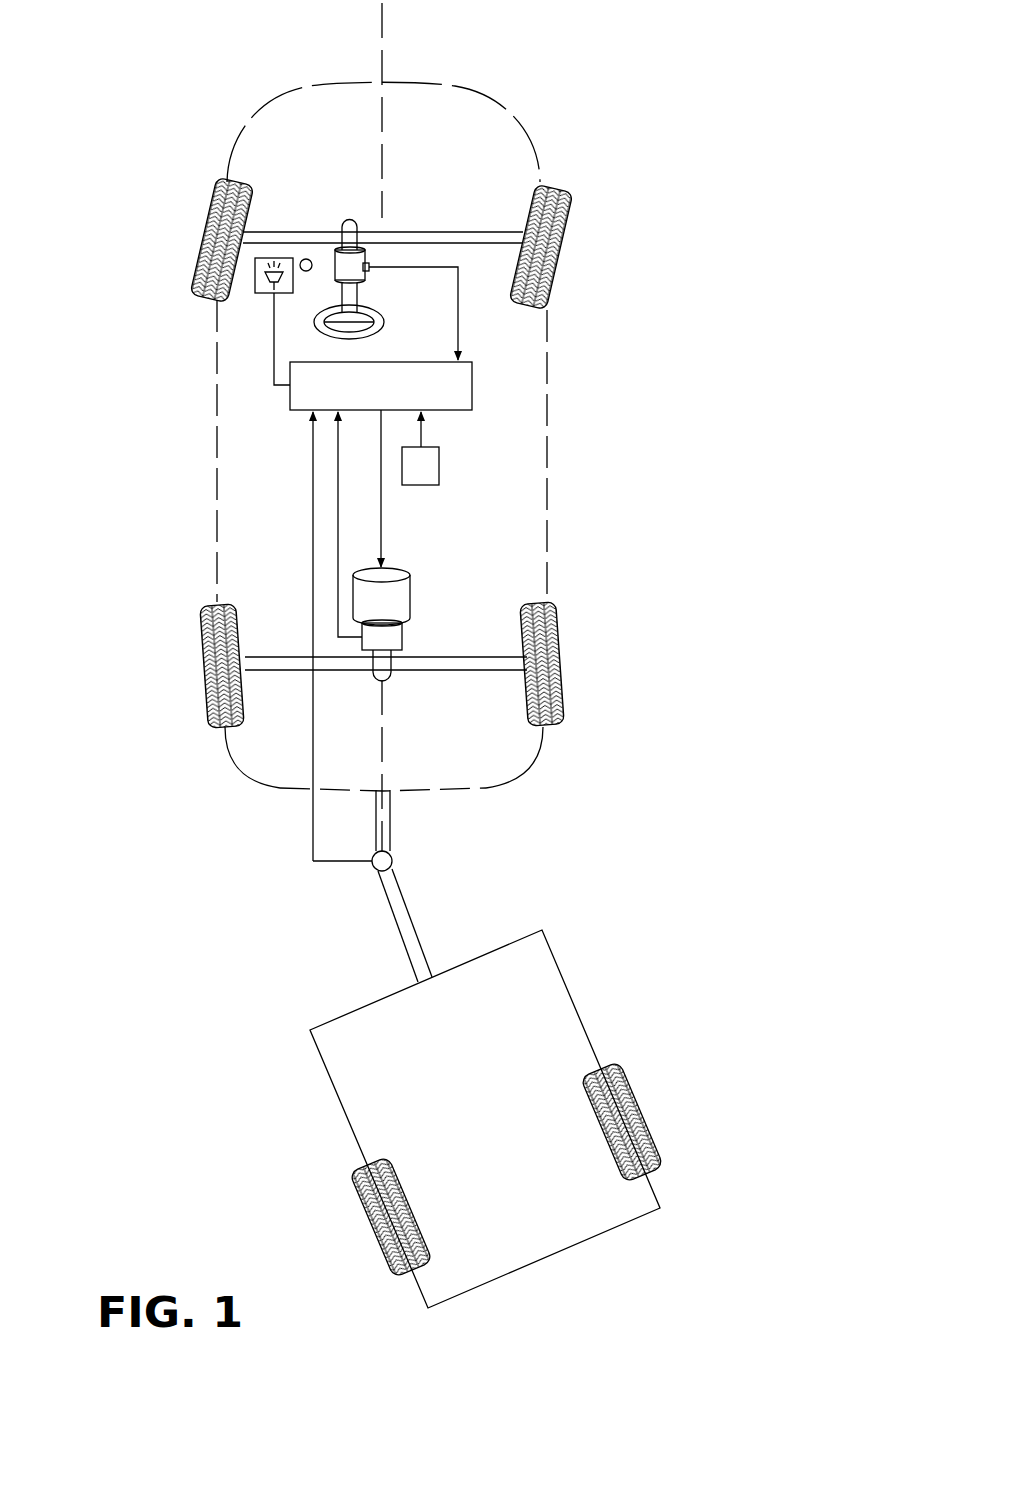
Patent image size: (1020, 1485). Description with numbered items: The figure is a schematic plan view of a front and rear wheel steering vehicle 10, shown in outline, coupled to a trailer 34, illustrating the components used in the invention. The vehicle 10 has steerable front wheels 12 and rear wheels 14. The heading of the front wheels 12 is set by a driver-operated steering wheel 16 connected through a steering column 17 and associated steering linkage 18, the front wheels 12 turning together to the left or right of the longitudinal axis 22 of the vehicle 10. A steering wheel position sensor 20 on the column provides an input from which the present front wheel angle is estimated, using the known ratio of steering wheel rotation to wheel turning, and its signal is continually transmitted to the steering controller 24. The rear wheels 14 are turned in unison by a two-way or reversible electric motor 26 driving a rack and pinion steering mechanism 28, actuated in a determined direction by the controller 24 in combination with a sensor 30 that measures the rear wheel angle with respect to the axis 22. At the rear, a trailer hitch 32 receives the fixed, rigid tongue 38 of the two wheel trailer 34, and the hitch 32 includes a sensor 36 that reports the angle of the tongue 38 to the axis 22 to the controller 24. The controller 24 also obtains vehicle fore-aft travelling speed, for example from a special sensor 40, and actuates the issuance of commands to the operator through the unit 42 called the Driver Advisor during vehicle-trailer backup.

The vehicle 10 is at (552, 453).
The front wheels 12 is at (202, 232).
The rear wheels 14 is at (200, 665).
The steering wheel 16 is at (382, 322).
The steering column 17 is at (352, 294).
The steering linkage 18 is at (420, 234).
The steering wheel position sensor 20 is at (367, 265).
The longitudinal axis 22 is at (382, 48).
The steering controller 24 is at (468, 370).
The electric motor 26 is at (403, 598).
The rack and pinion steering mechanism 28 is at (372, 673).
The rear wheel angle sensor 30 is at (400, 641).
The trailer hitch 32 is at (392, 818).
The trailer 34 is at (578, 1033).
The hitch sensor 36 is at (392, 857).
The trailer tongue 38 is at (412, 922).
The speed sensor 40 is at (430, 470).
The Driver Advisor 42 is at (263, 285).